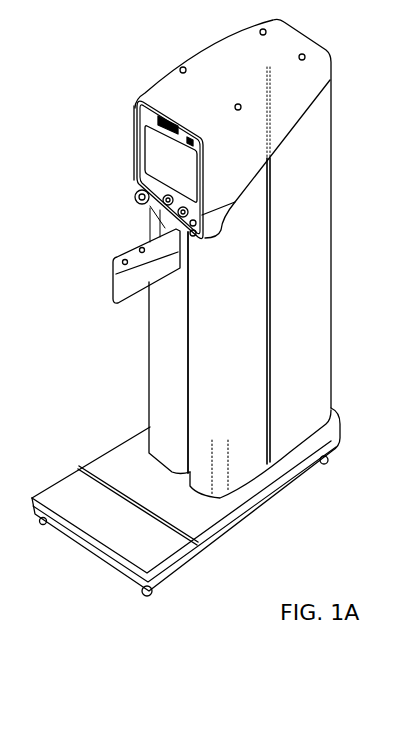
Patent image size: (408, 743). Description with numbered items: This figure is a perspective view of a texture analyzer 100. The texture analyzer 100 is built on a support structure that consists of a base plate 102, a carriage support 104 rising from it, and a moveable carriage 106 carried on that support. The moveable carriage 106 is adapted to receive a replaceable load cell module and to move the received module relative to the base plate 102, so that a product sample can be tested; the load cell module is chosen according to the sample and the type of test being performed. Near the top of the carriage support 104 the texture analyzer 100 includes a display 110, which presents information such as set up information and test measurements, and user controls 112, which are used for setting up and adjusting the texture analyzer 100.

The texture analyzer 100 is at (308, 292).
The base plate 102 is at (187, 563).
The carriage support 104 is at (163, 405).
The moveable carriage 106 is at (111, 259).
The display 110 is at (163, 155).
The user controls 112 is at (133, 197).